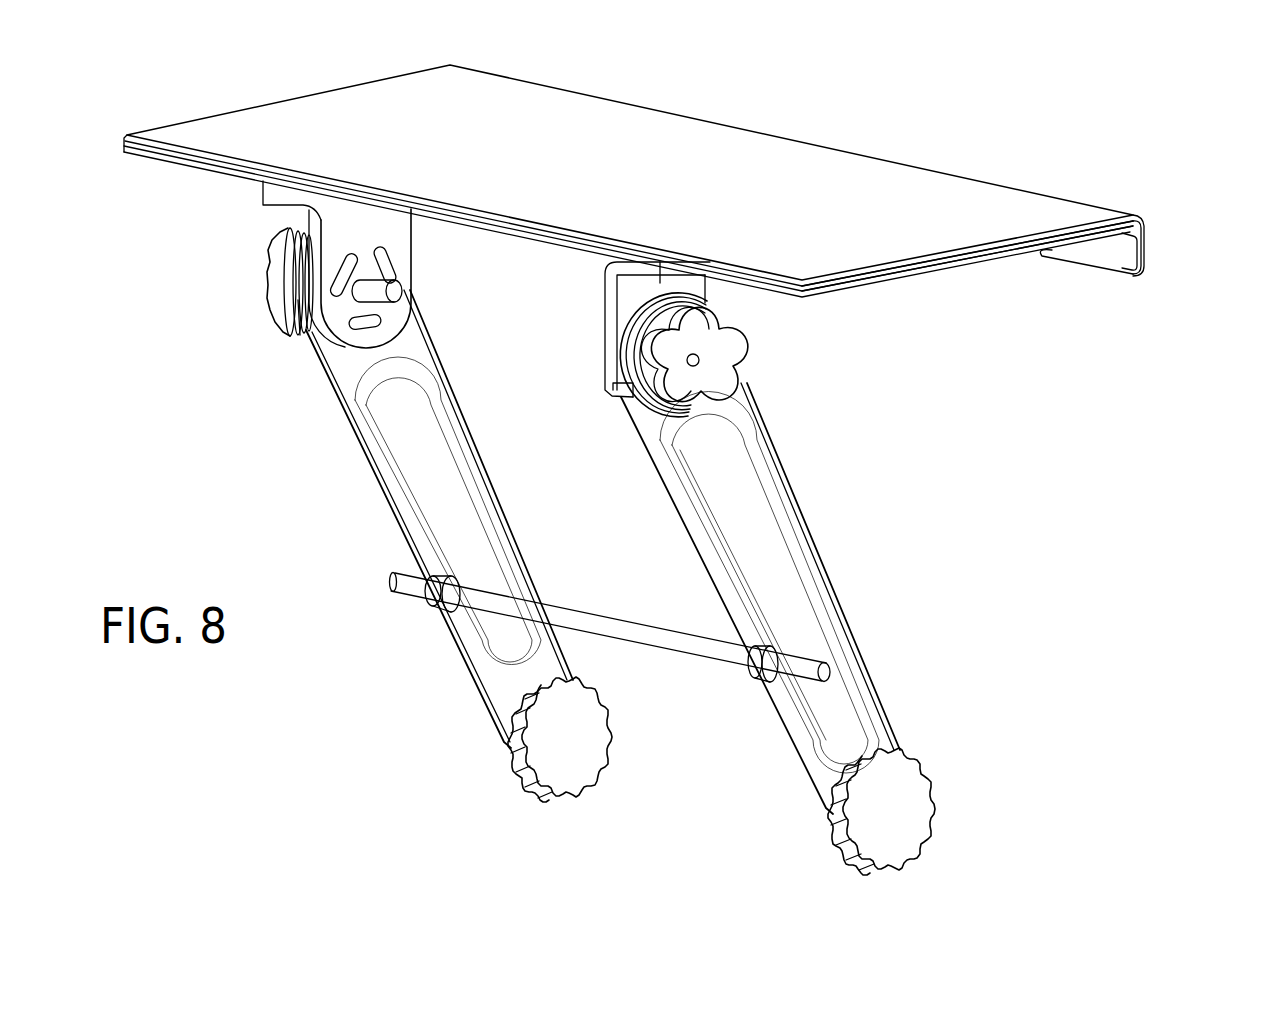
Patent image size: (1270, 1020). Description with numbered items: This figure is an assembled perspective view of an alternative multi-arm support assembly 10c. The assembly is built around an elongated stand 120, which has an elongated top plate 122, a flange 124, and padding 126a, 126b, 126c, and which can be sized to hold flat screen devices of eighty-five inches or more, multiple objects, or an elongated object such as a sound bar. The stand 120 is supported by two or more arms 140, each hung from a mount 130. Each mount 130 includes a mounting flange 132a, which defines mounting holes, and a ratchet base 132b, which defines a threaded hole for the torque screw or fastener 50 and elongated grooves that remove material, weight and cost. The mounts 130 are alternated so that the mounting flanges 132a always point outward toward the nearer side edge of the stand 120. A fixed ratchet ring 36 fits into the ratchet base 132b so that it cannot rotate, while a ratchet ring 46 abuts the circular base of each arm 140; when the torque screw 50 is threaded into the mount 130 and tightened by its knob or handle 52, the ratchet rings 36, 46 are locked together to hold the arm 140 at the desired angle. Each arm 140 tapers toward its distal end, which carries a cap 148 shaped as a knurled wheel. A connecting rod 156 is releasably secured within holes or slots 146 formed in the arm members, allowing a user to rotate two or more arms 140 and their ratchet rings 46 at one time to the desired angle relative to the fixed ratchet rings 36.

The multi-arm support assembly 10c is at (858, 97).
The padding 126a is at (604, 167).
The stand 120 is at (1143, 205).
The elongated top plate 122 is at (935, 287).
The flange 124 is at (1148, 252).
The padding 126b is at (1068, 262).
The padding 126c is at (1112, 258).
The mount 130 is at (486, 253).
The mounting flange 132a is at (286, 198).
The ratchet base 132b is at (365, 222).
The torque screw or fastener 50 is at (488, 327).
The knob or handle 52 is at (281, 262).
The ratchet ring 46 is at (300, 318).
The ratchet ring 36 is at (297, 325).
The arm 140 is at (372, 486).
The connecting rod 156 is at (620, 619).
The holes or slots 146 is at (445, 612).
The cap 148 is at (582, 753).